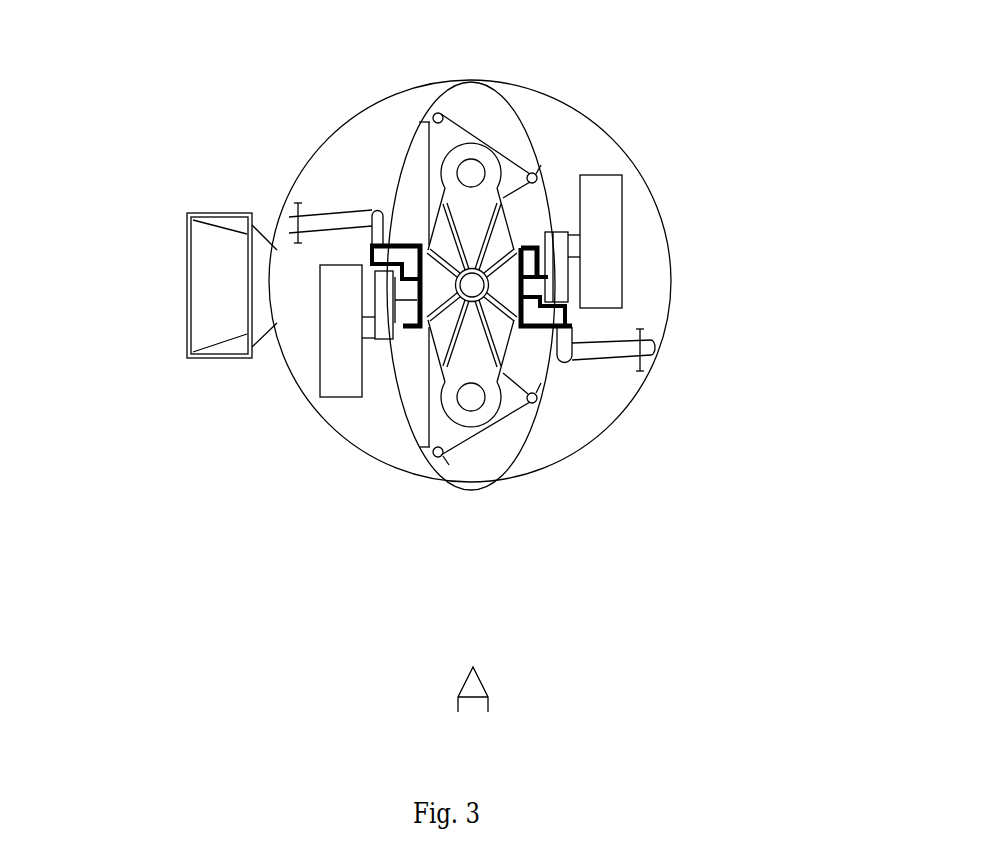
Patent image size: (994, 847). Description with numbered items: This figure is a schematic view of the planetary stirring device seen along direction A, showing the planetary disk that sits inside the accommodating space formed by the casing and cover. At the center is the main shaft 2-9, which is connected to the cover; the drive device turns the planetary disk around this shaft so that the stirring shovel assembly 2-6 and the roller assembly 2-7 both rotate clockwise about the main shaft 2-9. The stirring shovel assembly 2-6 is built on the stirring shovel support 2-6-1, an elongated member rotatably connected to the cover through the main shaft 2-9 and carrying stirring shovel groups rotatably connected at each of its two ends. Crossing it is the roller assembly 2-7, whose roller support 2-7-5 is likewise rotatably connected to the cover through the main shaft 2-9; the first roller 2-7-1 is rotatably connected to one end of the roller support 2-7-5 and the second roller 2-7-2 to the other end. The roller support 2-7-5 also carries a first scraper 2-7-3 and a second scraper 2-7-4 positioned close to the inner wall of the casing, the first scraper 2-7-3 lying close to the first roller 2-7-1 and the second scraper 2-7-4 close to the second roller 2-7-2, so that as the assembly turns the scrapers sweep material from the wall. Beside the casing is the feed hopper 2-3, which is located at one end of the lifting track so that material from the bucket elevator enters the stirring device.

The feed hopper 2-3 is at (168, 290).
The stirring shovel assembly 2-6 is at (477, 242).
The stirring shovel support 2-6-1 is at (389, 276).
The roller assembly 2-7 is at (485, 325).
The first roller 2-7-1 is at (277, 278).
The second roller 2-7-2 is at (707, 285).
The first scraper 2-7-3 is at (258, 179).
The second scraper 2-7-4 is at (612, 369).
The roller support 2-7-5 is at (679, 347).
The main shaft 2-9 is at (337, 298).